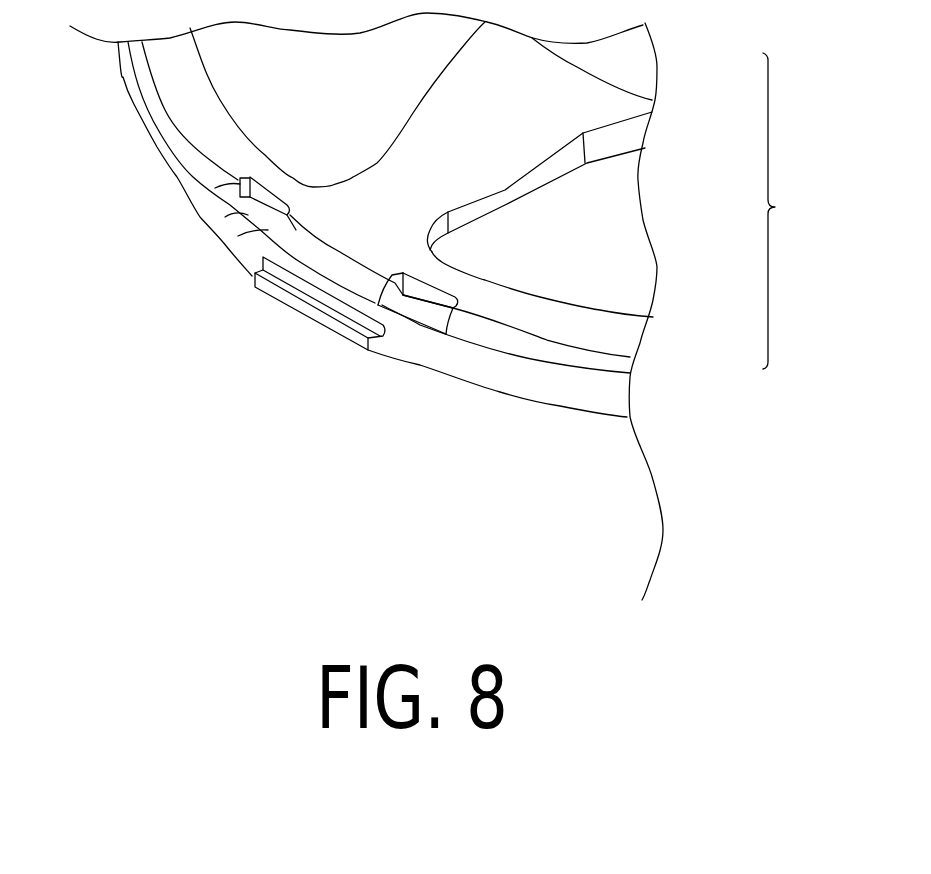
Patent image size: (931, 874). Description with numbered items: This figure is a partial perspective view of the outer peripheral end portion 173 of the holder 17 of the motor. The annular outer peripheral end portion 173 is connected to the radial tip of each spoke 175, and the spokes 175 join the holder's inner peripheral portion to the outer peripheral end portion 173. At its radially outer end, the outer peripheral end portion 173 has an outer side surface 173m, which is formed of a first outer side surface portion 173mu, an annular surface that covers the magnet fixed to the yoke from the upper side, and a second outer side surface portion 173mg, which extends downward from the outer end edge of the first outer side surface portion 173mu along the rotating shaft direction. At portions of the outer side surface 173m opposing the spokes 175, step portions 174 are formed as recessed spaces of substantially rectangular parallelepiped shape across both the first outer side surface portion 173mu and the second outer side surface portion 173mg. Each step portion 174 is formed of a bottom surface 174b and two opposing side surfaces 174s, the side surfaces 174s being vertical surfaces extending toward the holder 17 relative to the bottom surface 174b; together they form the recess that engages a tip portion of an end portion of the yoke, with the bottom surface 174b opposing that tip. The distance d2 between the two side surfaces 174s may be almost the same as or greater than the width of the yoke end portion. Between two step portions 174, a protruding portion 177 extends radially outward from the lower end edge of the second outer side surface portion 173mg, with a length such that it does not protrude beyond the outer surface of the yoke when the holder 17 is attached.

The holder 17 is at (440, 306).
The outer peripheral end portion 173 is at (604, 332).
The outer side surface 173m is at (592, 462).
The second outer side surface portion 173mg is at (437, 350).
The first outer side surface portion 173mu is at (530, 317).
The step portion 174 is at (78, 222).
The side surface 174s is at (228, 193).
The bottom surface 174b is at (235, 212).
The spoke 175 is at (517, 149).
The protruding portion 177 is at (626, 62).
The distance between the two side surfaces d2 is at (252, 173).